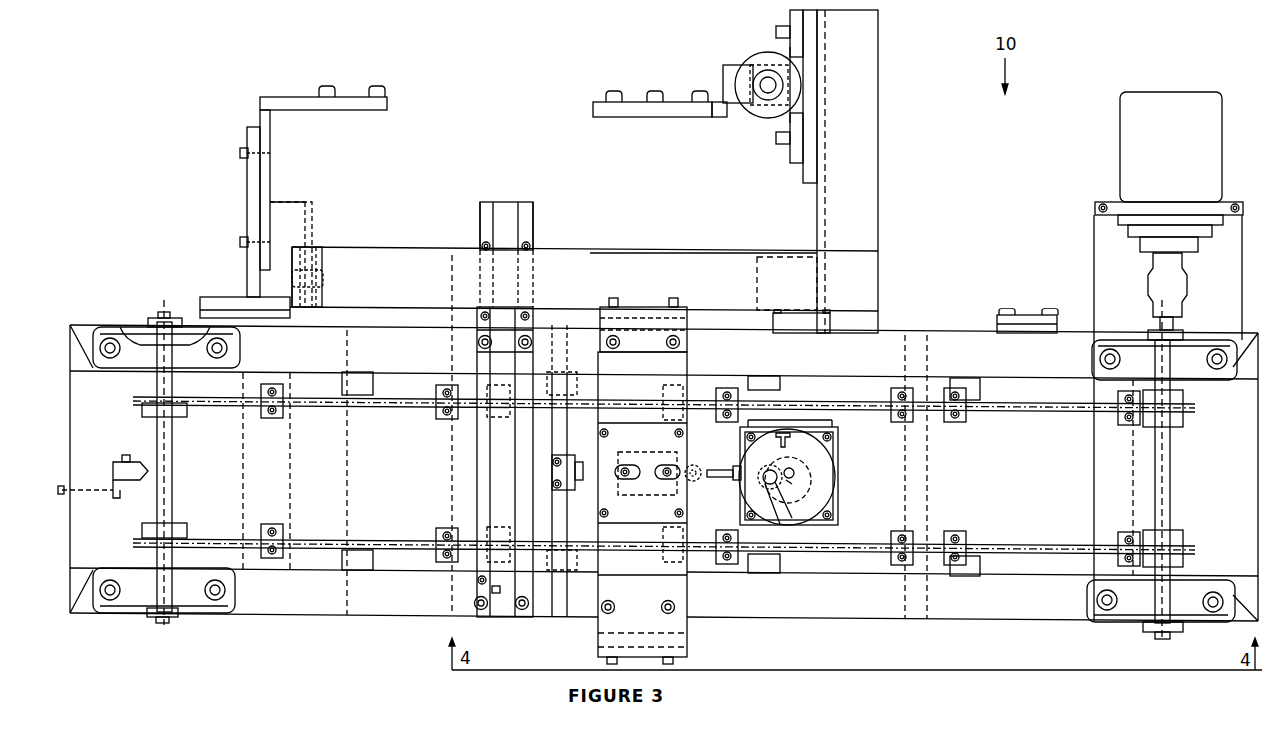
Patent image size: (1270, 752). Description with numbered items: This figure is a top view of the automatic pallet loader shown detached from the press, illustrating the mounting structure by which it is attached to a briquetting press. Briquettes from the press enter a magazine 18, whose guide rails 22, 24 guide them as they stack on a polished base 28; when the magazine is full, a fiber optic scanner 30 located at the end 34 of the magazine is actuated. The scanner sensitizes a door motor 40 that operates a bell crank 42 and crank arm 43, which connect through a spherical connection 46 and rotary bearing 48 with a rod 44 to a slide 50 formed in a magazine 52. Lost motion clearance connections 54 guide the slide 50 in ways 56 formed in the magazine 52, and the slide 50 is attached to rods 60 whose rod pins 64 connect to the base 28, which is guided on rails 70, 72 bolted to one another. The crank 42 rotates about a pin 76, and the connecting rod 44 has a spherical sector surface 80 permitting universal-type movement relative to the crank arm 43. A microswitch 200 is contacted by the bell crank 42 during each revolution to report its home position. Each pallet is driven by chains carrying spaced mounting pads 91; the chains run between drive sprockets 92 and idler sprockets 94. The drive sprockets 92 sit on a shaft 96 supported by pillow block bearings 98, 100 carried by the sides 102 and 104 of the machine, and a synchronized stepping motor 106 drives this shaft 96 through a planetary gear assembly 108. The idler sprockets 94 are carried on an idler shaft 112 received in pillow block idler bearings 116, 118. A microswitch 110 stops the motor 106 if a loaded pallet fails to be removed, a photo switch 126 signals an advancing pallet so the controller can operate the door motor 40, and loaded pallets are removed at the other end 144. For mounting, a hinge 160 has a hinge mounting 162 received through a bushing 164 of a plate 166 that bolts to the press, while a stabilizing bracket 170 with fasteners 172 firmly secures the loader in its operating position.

The magazine 18 is at (505, 215).
The guide rail 22 is at (533, 238).
The guide rail 24 is at (480, 220).
The polished base 28 is at (505, 461).
The fiber optic scanner 30 is at (492, 590).
The end of the magazine 34 is at (492, 612).
The door motor 40 is at (830, 512).
The bell crank 42 is at (800, 490).
The crank arm 43 is at (755, 520).
The connecting rod 44 is at (720, 468).
The spherical connection 46 is at (790, 515).
The rotary bearing 48 is at (820, 472).
The slide 50 is at (660, 495).
The magazine 52 is at (660, 590).
The lost motion clearance connections 54 is at (640, 470).
The ways 56 is at (622, 412).
The rods 60 is at (585, 470).
The rod pins 64 is at (583, 475).
The rail 70 is at (592, 320).
The rail 72 is at (560, 607).
The pin 76 is at (796, 480).
The spherical sector surface 80 is at (700, 480).
The mounting pads 91 is at (272, 420).
The drive sprockets 92 is at (1175, 540).
The idler sprockets 94 is at (187, 411).
The shaft 96 is at (1155, 466).
The pillow block bearing 98 is at (1213, 592).
The pillow block bearing 100 is at (1215, 342).
The side 102 is at (1018, 610).
The side 104 is at (1036, 368).
The synchronized stepping motor 106 is at (1178, 137).
The planetary gear assembly 108 is at (1160, 288).
The microswitch 110 is at (148, 470).
The idler shaft 112 is at (168, 482).
The pillow block idler bearing 116 is at (190, 598).
The pillow block idler bearing 118 is at (133, 340).
The photo switch 126 is at (478, 580).
The other end 144 is at (110, 332).
The hinge 160 is at (850, 80).
The hinge mounting 162 is at (755, 62).
The bushing 164 is at (730, 117).
The plate 166 is at (668, 118).
The stabilizing bracket 170 is at (287, 97).
The fasteners 172 is at (353, 97).
The microswitch 200 is at (790, 435).